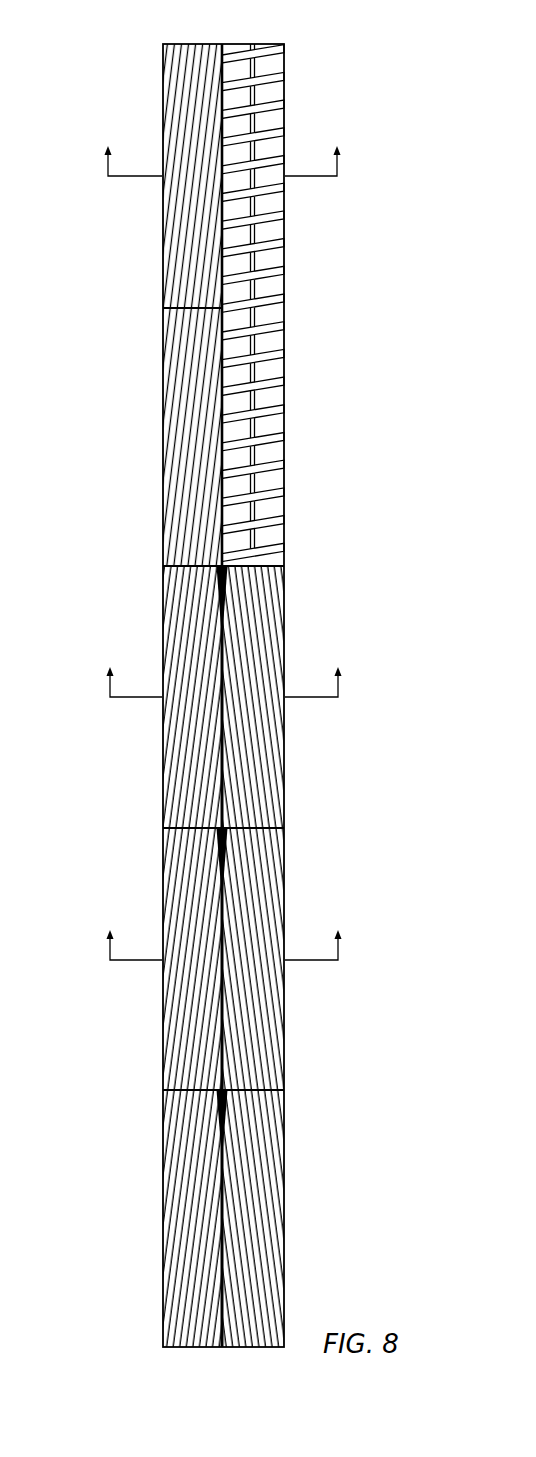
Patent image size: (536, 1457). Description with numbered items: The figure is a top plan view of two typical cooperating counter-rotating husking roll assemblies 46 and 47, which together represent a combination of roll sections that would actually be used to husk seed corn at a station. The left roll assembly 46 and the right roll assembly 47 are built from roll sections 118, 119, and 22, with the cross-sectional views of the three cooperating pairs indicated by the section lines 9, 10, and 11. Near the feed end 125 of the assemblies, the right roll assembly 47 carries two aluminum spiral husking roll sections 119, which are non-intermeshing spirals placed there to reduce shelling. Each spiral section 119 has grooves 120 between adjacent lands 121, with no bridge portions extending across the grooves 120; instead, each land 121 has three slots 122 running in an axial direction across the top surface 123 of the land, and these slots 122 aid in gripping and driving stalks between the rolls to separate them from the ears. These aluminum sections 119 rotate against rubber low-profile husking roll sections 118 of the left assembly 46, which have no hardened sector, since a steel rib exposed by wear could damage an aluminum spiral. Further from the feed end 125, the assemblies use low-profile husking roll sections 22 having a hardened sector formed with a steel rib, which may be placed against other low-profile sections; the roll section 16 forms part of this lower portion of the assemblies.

The husking roll section 16 is at (278, 765).
The low-profile husking roll section 22 is at (162, 722).
The roll assembly 46 is at (160, 72).
The roll assembly 47 is at (286, 70).
The low-profile husking roll section 118 is at (161, 205).
The spiral husking roll section 119 is at (284, 305).
The groove 120 is at (284, 296).
The land 121 is at (284, 278).
The slot 122 is at (284, 225).
The top surface 123 is at (284, 204).
The feed end 125 is at (225, 44).
The section line 9- 9 is at (222, 150).
The section line 10- 10 is at (224, 670).
The section line 11- 11 is at (224, 933).